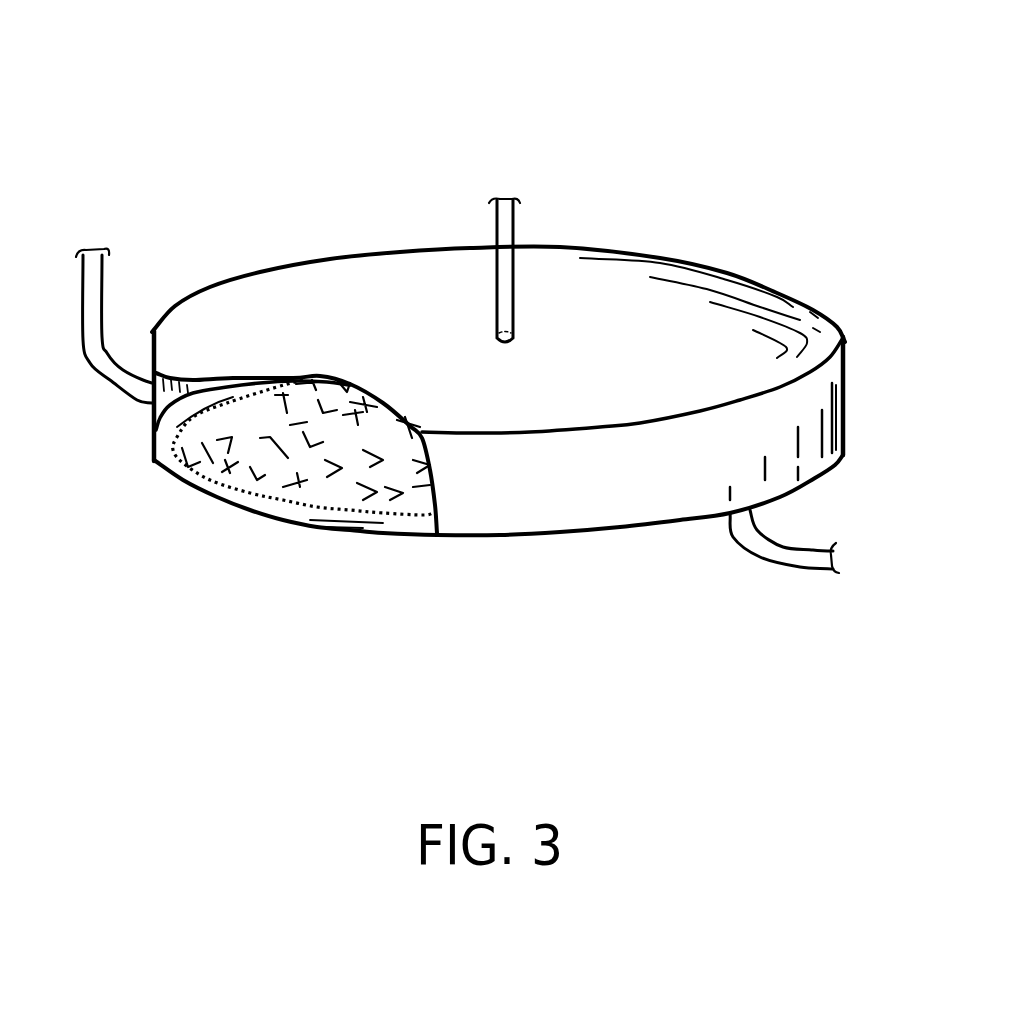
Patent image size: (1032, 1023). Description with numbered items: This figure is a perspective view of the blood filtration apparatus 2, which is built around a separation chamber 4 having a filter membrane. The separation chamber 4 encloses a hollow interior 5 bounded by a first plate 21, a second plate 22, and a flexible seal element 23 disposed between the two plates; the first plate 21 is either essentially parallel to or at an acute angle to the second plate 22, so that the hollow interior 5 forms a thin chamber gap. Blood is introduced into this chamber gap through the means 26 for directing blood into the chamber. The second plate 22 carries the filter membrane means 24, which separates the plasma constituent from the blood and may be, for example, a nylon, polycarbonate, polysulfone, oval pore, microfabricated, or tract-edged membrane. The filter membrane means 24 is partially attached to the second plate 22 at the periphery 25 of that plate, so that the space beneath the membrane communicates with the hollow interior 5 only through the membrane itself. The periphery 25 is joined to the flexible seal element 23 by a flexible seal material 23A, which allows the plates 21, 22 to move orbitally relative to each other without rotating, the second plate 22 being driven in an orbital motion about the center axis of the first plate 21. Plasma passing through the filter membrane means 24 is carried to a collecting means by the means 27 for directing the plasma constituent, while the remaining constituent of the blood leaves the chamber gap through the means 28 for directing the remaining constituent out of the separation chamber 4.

The blood filtration apparatus 2 is at (476, 104).
The separation chamber 4 is at (653, 177).
The hollow interior 5 is at (242, 400).
The first plate 21 is at (643, 270).
The second plate 22 is at (608, 537).
The flexible seal element 23 is at (850, 390).
The flexible seal material 23A is at (183, 477).
The filter membrane means 24 is at (312, 484).
The periphery of the second plate 25 is at (390, 520).
The means for directing blood 26 is at (520, 217).
The means for directing plasma constituent 27 is at (800, 530).
The means for directing remaining constituent 28 is at (110, 273).